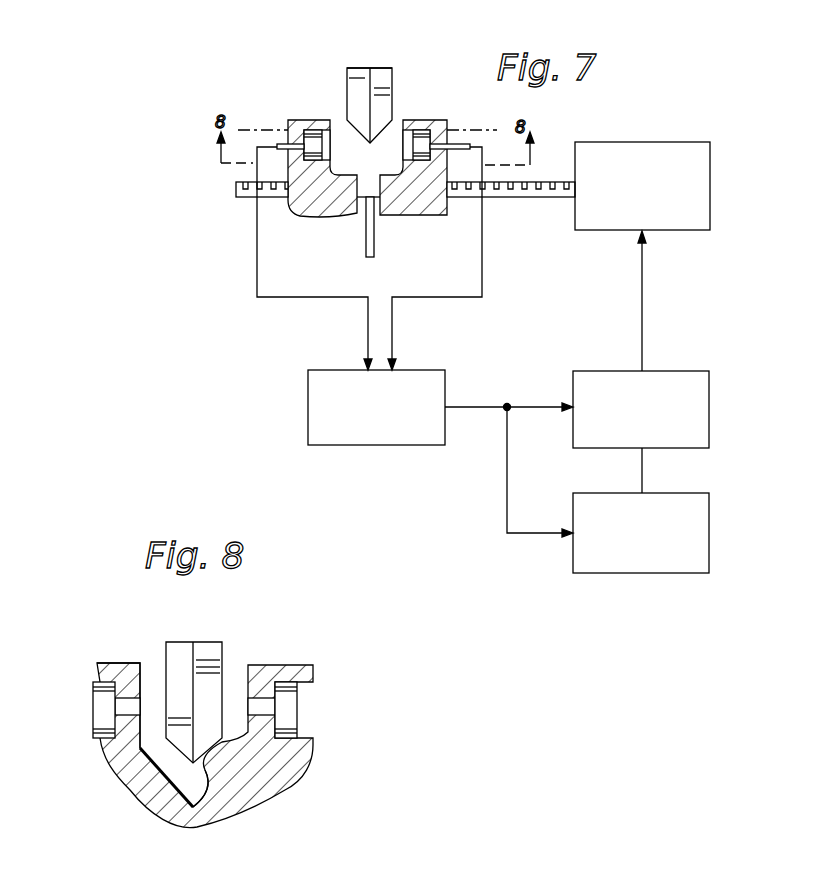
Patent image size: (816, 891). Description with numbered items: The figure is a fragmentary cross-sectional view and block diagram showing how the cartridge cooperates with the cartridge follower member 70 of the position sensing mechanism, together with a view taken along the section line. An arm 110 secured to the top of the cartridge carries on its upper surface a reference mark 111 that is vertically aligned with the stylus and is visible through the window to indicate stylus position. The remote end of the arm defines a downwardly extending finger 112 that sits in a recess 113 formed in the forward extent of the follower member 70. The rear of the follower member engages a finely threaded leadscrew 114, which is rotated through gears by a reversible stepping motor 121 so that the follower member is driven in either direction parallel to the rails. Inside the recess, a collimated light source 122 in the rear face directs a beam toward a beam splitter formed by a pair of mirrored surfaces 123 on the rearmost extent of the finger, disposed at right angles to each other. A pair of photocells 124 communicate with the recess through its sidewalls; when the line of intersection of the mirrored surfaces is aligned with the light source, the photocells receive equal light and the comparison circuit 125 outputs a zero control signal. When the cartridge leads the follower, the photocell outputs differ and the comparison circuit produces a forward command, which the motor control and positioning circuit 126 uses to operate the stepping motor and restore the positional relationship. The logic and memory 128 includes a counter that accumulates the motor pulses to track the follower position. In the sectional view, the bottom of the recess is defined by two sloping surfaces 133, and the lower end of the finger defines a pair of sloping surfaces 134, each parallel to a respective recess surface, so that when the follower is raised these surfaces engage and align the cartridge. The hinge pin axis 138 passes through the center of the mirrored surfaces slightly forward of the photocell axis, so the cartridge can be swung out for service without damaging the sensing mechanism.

In FIG. 7, the cartridge follower member 70 is at (413, 205).
In FIG. 8, the cartridge follower member 70 is at (124, 657).
In FIG. 7, the arm 110 is at (393, 82).
In FIG. 8, the arm 110 is at (218, 640).
In FIG. 7, the reference mark 111 is at (375, 68).
In FIG. 8, the finger 112 is at (228, 815).
In FIG. 7, the recess 113 is at (338, 118).
In FIG. 7, the leadscrew 114 is at (510, 197).
In FIG. 7, the stepping motor 121 is at (672, 142).
In FIG. 7, the collimated light source 122 is at (357, 207).
In FIG. 7, the mirrored surfaces 123 is at (350, 68).
In FIG. 8, the mirrored surfaces 123 is at (196, 653).
In FIG. 7, the photocells 124 is at (315, 132).
In FIG. 8, the photocells 124 is at (93, 722).
In FIG. 7, the comparison circuit 125 is at (420, 447).
In FIG. 7, the motor control and positioning circuit 126 is at (705, 340).
In FIG. 7, the logic and memory 128 is at (705, 470).
In FIG. 8, the sloping surfaces 133 is at (190, 812).
In FIG. 8, the sloping surfaces 134 is at (170, 756).
In FIG. 7, the axis 138 is at (238, 130).